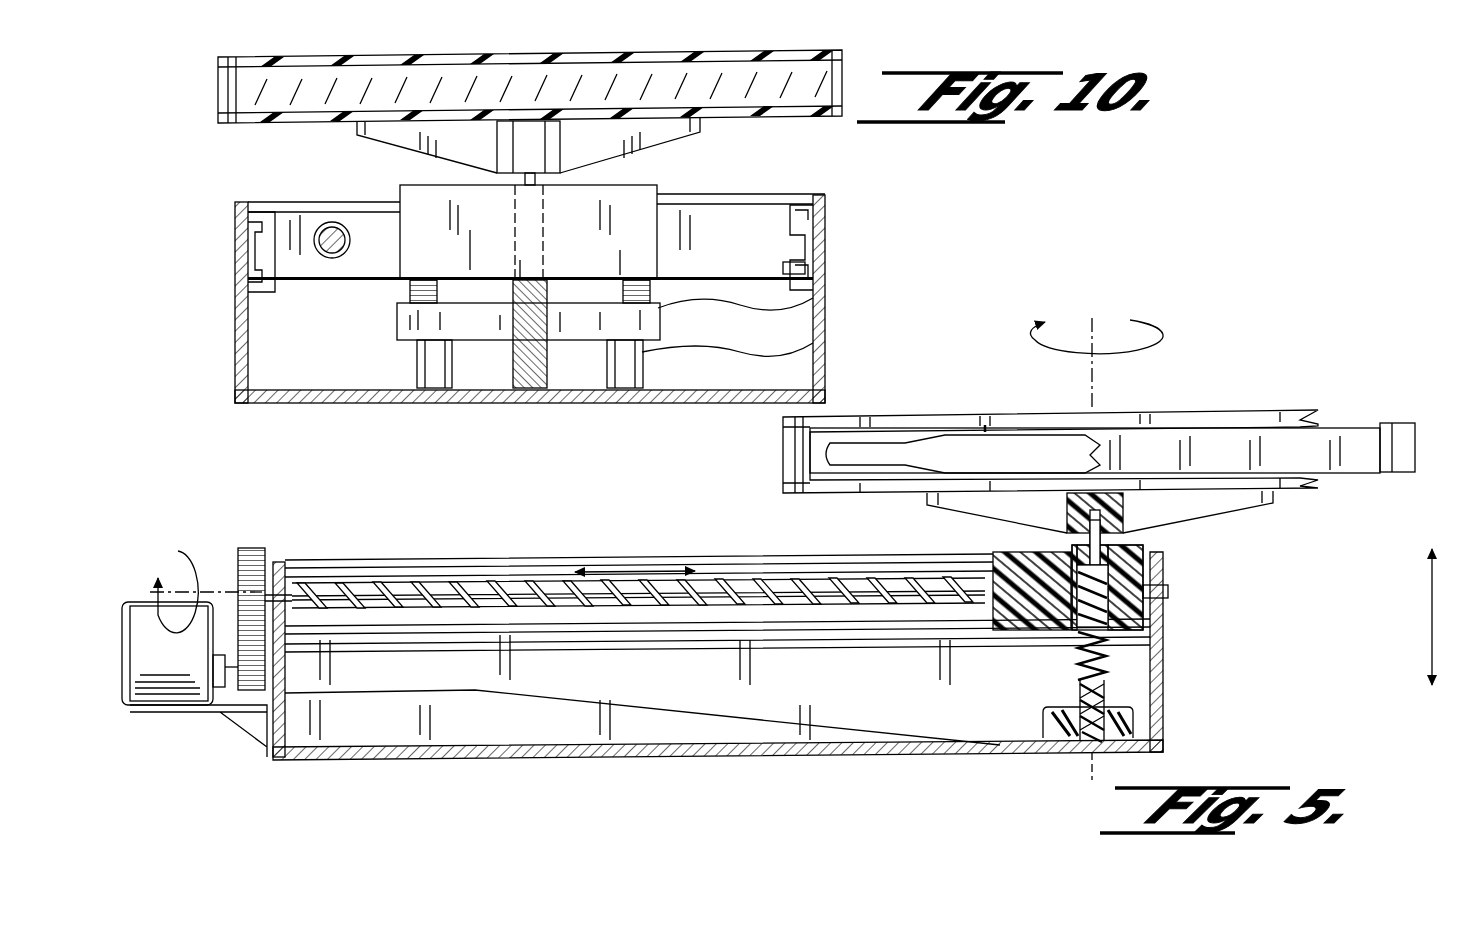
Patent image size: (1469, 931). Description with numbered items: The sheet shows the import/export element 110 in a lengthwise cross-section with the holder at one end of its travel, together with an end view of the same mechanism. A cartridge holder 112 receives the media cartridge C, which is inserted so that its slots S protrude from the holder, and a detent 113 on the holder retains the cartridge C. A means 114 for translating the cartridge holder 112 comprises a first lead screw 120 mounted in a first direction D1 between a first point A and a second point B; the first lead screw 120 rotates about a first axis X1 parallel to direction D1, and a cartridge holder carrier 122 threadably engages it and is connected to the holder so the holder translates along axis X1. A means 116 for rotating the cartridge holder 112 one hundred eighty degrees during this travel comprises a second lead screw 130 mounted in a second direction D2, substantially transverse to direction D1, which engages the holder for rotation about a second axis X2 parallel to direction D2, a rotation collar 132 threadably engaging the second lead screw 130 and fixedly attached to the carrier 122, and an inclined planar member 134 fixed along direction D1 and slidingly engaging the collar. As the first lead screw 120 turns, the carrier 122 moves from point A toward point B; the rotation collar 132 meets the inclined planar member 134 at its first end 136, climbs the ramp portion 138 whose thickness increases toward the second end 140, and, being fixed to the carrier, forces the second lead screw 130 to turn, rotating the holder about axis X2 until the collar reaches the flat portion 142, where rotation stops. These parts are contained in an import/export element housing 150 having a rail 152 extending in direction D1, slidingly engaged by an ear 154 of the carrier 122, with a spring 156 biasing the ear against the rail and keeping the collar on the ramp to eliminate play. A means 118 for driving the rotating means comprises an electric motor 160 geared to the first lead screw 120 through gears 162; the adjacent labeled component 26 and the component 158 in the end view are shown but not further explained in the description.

In FIG. 5, the gear 26 is at (258, 548).
In FIG. 5, the import/export element 110 is at (1080, 758).
In FIG. 10, the cartridge holder 112 is at (690, 140).
In FIG. 5, the cartridge holder 112 is at (892, 425).
In FIG. 5, the detent 113 is at (985, 425).
In FIG. 5, the means for translating the cartridge holder 114 is at (625, 555).
In FIG. 5, the means for rotating the cartridge holder 116 is at (1185, 687).
In FIG. 5, the means for driving the rotating means 118 is at (194, 688).
In FIG. 10, the first lead screw 120 is at (345, 230).
In FIG. 5, the first lead screw 120 is at (445, 580).
In FIG. 10, the cartridge holder carrier 122 is at (800, 230).
In FIG. 5, the cartridge holder carrier 122 is at (1148, 612).
In FIG. 10, the second lead screw 130 is at (520, 375).
In FIG. 5, the second lead screw 130 is at (1105, 695).
In FIG. 10, the rotation collar 132 is at (397, 320).
In FIG. 5, the rotation collar 132 is at (1135, 722).
In FIG. 10, the inclined planar member 134 is at (420, 400).
In FIG. 5, the inclined planar member 134 is at (682, 744).
In FIG. 5, the first end 136 is at (978, 745).
In FIG. 5, the ramp portion 138 is at (865, 730).
In FIG. 5, the second end 140 is at (565, 758).
In FIG. 5, the flat portion 142 is at (370, 690).
In FIG. 10, the import/export element housing 150 is at (825, 240).
In FIG. 5, the import/export element housing 150 is at (430, 762).
In FIG. 10, the rail 152 is at (812, 270).
In FIG. 10, the ear 154 is at (262, 255).
In FIG. 10, the spring 156 is at (825, 308).
In FIG. 10, the guide 158 is at (825, 350).
In FIG. 5, the electric motor 160 is at (175, 685).
In FIG. 5, the gears 162 is at (238, 688).
In FIG. 10, the media cartridge C is at (575, 95).
In FIG. 5, the media cartridge C is at (1415, 445).
In FIG. 5, the slots S is at (1392, 472).
In FIG. 5, the first point A is at (1212, 750).
In FIG. 5, the second point B is at (278, 760).
In FIG. 5, the first axis X1 is at (168, 565).
In FIG. 5, the second axis X2 is at (1095, 400).
In FIG. 5, the first direction D1 is at (628, 571).
In FIG. 5, the second direction D2 is at (1432, 604).